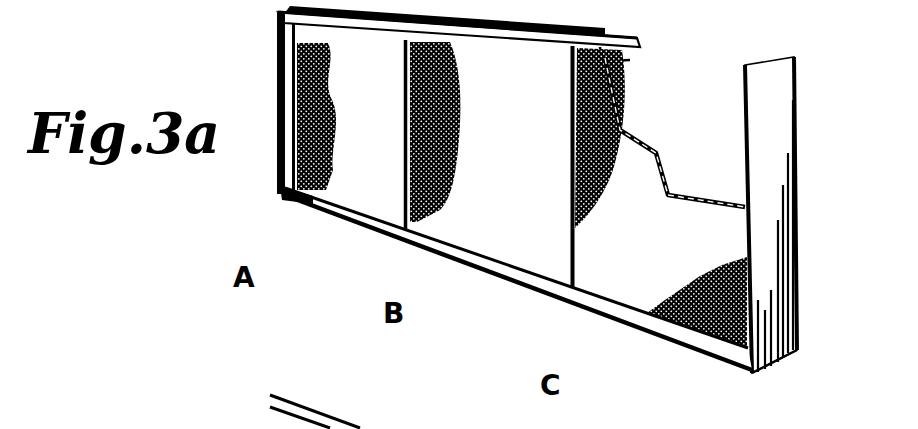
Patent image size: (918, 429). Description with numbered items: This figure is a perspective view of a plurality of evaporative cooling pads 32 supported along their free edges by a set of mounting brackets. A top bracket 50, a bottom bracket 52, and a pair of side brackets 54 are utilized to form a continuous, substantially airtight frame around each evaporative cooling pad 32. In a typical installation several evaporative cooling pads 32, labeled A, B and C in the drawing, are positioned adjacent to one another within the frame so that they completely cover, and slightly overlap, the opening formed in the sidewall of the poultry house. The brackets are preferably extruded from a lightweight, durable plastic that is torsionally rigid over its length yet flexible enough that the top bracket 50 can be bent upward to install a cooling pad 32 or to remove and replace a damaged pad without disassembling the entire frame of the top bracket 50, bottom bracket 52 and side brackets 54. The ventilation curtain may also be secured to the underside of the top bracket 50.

The evaporative cooling pad 32 is at (250, 250).
The top bracket 50 is at (540, 33).
The bottom bracket 52 is at (668, 345).
The side bracket 54 is at (278, 60).